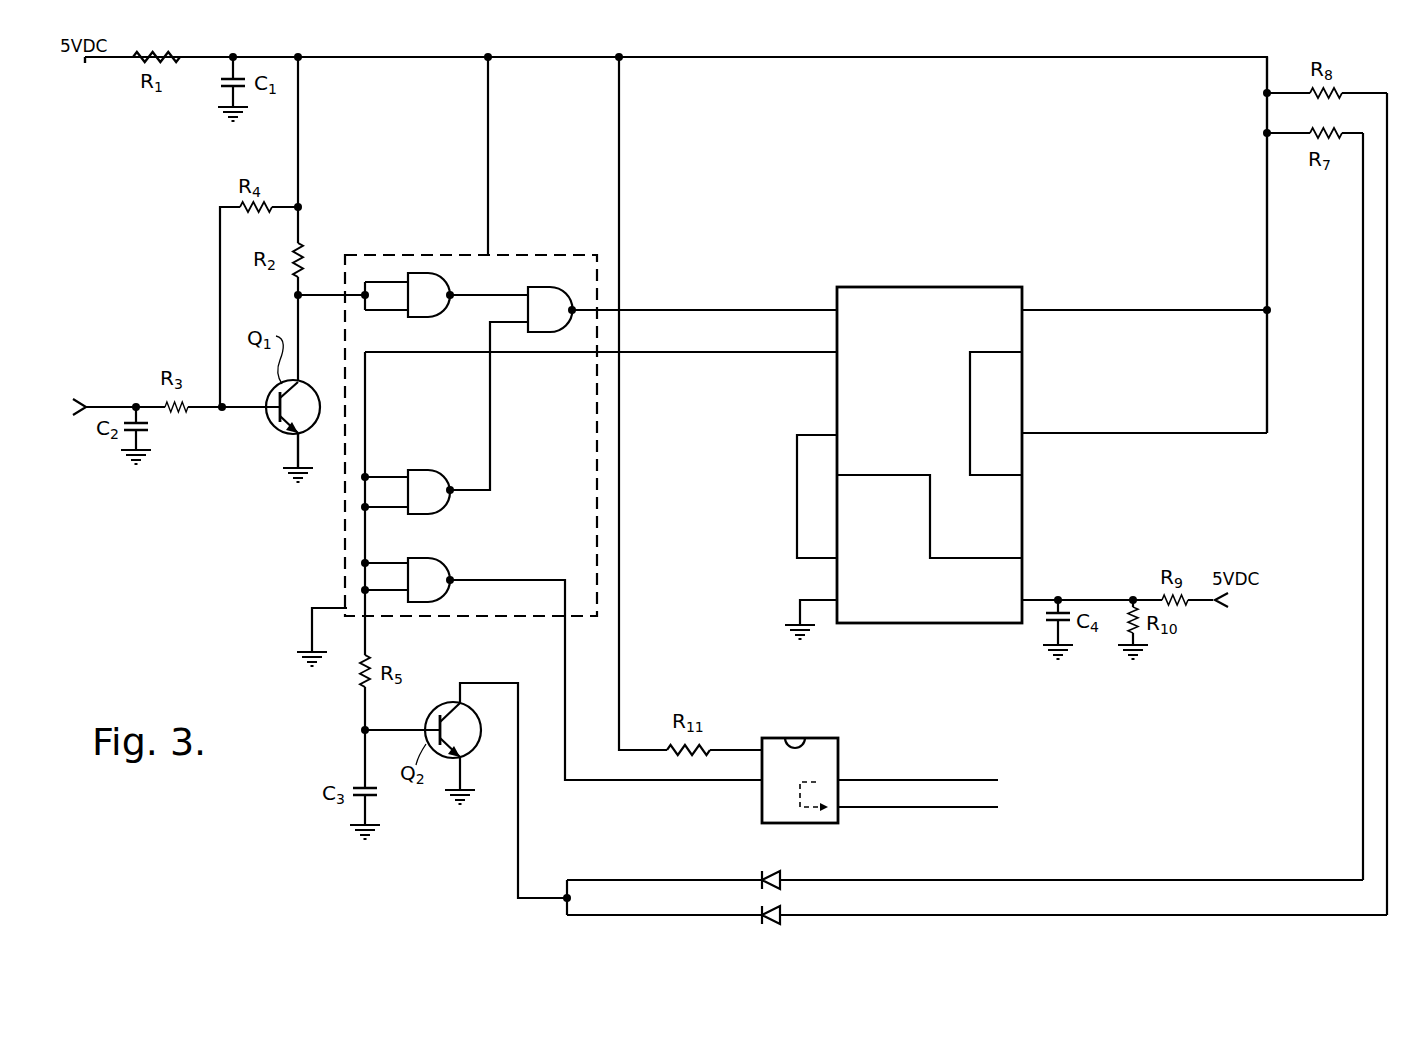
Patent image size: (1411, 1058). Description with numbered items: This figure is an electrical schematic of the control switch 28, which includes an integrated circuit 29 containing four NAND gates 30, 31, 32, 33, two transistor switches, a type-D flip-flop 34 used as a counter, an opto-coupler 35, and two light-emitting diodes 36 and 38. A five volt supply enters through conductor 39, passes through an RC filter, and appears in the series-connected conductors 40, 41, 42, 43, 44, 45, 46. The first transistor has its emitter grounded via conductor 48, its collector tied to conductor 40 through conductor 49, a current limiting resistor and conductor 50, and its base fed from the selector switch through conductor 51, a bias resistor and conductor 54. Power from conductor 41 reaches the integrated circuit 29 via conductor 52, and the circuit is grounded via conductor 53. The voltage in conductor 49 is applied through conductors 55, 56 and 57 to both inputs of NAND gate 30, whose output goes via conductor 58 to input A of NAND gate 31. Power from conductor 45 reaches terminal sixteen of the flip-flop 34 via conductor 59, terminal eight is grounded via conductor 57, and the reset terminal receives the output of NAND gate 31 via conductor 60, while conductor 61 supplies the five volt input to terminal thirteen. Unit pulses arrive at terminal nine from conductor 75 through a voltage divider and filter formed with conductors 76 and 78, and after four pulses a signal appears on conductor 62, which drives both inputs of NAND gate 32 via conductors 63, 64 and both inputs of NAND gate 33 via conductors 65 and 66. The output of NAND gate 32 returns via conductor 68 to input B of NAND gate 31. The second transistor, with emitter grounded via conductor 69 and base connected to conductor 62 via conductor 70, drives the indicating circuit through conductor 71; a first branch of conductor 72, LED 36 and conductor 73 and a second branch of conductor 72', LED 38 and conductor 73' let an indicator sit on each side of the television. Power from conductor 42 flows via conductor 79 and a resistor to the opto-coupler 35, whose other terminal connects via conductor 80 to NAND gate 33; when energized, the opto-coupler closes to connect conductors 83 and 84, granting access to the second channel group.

The control switch 28 is at (1282, 54).
The integrated circuit 29 is at (540, 255).
The NAND gate 30 is at (452, 272).
The NAND gate 31 is at (568, 286).
The NAND gate 32 is at (442, 470).
The NAND gate 33 is at (445, 556).
The type-D flip-flop 34 is at (916, 287).
The opto-coupler 35 is at (820, 738).
The light-emitting diode 36 is at (786, 872).
The light-emitting diode 38 is at (786, 908).
The conductor 39 is at (86, 63).
The conductor 40 is at (256, 78).
The conductor 41 is at (384, 59).
The conductor 42 is at (540, 59).
The conductor 43 is at (781, 59).
The conductor 44 is at (1267, 104).
The conductor 45 is at (1267, 174).
The conductor 46 is at (1267, 360).
The conductor 48 is at (292, 437).
The conductor 49 is at (300, 318).
The conductor 50 is at (300, 140).
The conductor 51 is at (102, 405).
The conductor 52 is at (484, 148).
The conductor 53 is at (328, 606).
The conductor 54 is at (258, 398).
The conductor 55 is at (332, 296).
The conductor 56 is at (376, 268).
The conductor 57 is at (372, 312).
The conductor 58 is at (488, 298).
The conductor 59 is at (1144, 310).
The conductor 60 is at (736, 296).
The conductor 61 is at (1118, 433).
The conductor 62 is at (572, 352).
The conductor 63 is at (392, 470).
The conductor 64 is at (400, 512).
The conductor 65 is at (396, 542).
The conductor 66 is at (380, 594).
The conductor 68 is at (492, 440).
The conductor 69 is at (462, 772).
The conductor 70 is at (404, 726).
The conductor 71 is at (520, 826).
The conductor 72 is at (965, 860).
The conductor 72' is at (977, 932).
The conductor 73 is at (1191, 506).
The conductor 73' is at (1180, 520).
The conductor 75 is at (1208, 604).
The conductor 76 is at (1112, 598).
The conductor 78 is at (1038, 598).
The conductor 79 is at (621, 430).
The conductor 80 is at (567, 648).
The conductor 83 is at (934, 780).
The conductor 84 is at (950, 808).